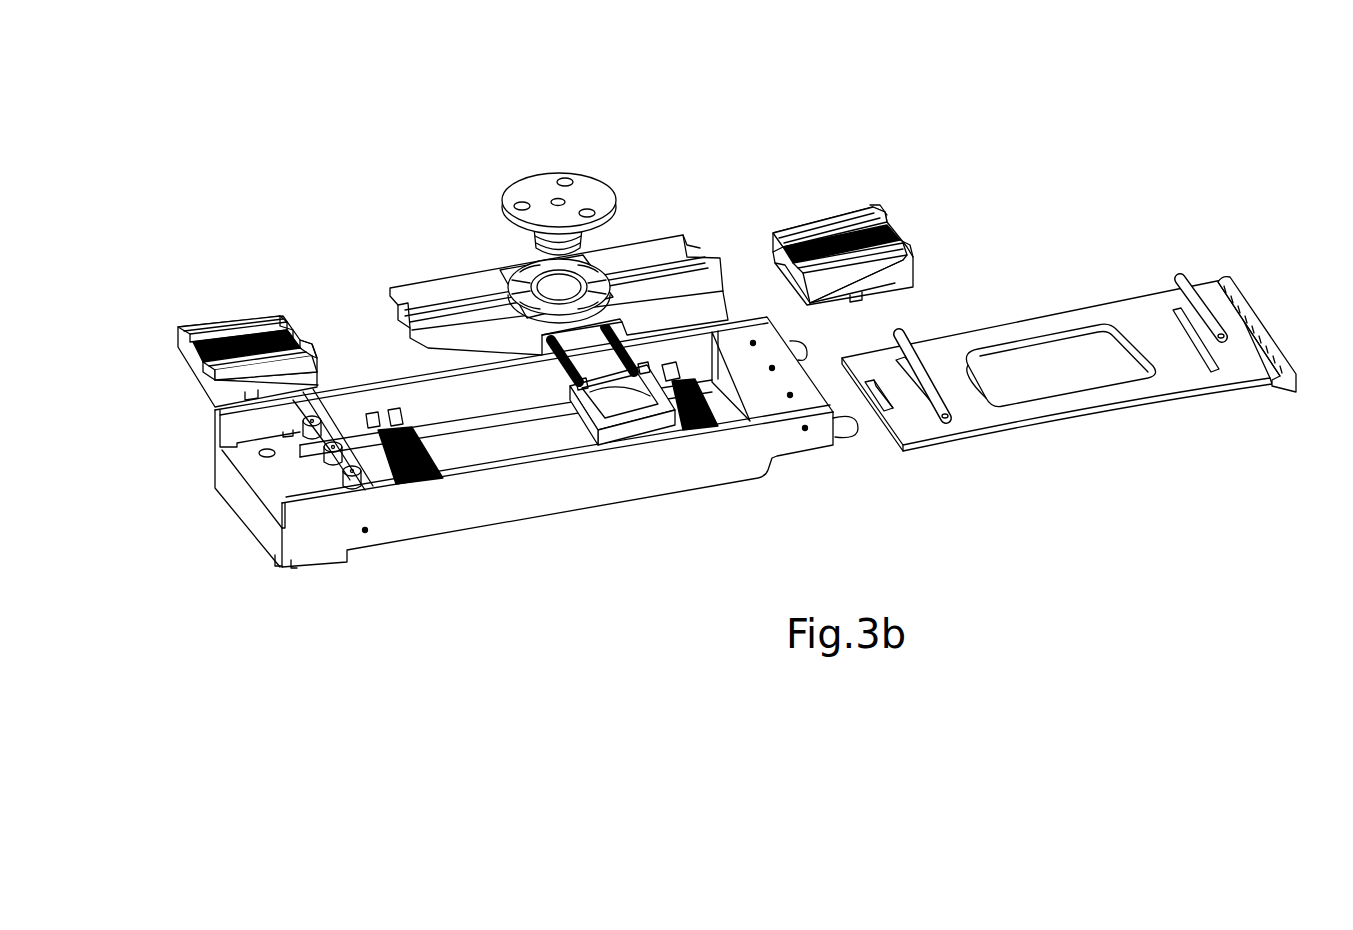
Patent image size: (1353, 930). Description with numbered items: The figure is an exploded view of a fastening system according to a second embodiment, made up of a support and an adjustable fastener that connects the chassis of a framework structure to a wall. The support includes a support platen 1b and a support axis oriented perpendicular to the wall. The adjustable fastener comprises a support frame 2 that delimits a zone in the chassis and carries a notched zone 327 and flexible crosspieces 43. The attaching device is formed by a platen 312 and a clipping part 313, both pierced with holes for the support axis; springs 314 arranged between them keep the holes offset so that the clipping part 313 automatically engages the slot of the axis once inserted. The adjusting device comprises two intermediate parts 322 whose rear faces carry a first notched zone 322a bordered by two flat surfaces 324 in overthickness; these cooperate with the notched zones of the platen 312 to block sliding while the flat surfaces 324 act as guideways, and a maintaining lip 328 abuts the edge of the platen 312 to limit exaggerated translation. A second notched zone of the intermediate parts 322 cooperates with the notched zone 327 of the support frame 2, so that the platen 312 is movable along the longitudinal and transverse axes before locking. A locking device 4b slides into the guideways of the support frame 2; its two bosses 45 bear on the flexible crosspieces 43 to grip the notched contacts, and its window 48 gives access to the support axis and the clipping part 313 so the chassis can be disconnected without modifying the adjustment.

The support platen 1b is at (587, 193).
The support frame 2 is at (327, 540).
The flexible crosspieces 43 is at (387, 487).
The bosses 45 is at (932, 400).
The window 48 is at (1092, 380).
The locking device 4b is at (1175, 412).
The platen 312 is at (683, 243).
The clipping part 313 is at (638, 428).
The springs 314 is at (553, 362).
The intermediate parts 322 is at (907, 285).
The first notched zone 322a is at (883, 213).
The flat surfaces 324 is at (802, 232).
The notched zone 327 is at (700, 433).
The maintaining lip 328 is at (900, 243).